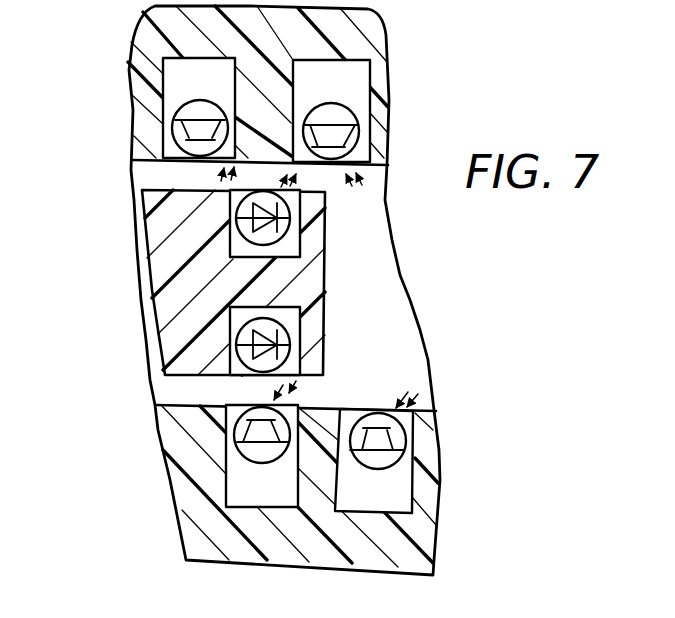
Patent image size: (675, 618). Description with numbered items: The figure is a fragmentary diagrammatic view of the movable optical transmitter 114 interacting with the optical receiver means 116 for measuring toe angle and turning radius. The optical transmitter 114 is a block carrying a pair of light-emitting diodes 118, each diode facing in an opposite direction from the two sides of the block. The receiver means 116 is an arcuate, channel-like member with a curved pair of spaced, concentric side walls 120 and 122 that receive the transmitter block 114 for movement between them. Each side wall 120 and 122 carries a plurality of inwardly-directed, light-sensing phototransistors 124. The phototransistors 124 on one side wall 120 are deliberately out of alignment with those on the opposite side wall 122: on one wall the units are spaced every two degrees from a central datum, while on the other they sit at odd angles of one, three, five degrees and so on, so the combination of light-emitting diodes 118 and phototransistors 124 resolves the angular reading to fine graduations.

The optical transmitter 114 is at (338, 228).
The optical receiver means 116 is at (390, 50).
The light-emitting diodes 118 is at (287, 335).
The side wall 120 is at (150, 162).
The side wall 122 is at (160, 404).
The light-sensing phototransistors 124 is at (183, 108).